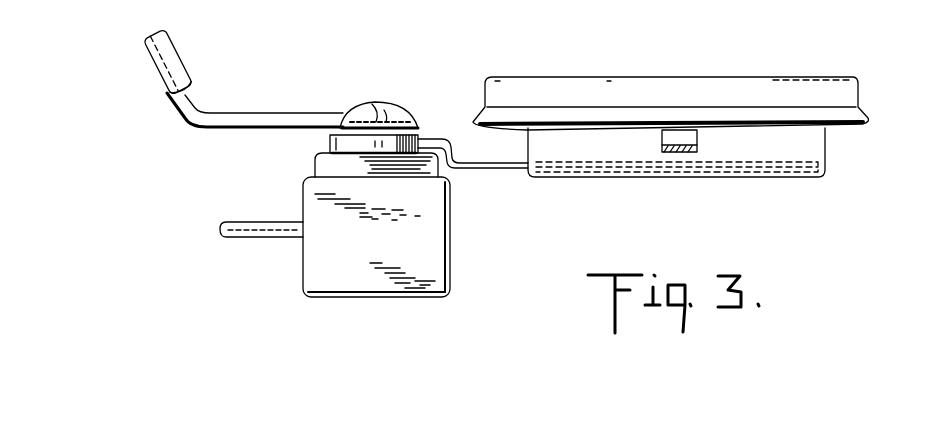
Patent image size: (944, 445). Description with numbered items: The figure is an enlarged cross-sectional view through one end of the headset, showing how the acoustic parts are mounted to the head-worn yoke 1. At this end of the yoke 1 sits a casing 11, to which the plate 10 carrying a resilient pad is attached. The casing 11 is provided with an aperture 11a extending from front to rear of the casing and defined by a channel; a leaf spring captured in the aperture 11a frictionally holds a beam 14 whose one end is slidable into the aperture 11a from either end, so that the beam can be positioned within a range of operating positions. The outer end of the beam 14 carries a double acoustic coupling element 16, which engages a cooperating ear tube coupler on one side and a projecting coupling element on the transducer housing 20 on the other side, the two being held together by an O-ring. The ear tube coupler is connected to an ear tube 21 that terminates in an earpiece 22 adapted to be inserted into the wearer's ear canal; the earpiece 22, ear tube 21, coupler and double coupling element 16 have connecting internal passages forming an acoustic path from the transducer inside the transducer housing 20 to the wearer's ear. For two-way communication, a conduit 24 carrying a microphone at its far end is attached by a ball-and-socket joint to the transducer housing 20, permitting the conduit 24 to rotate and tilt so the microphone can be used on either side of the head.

The yoke 1 is at (678, 143).
The plate 10 is at (843, 92).
The casing 11 is at (817, 145).
The aperture 11a is at (777, 163).
The beam 14 is at (495, 168).
The double acoustic coupling element 16 is at (332, 143).
The transducer housing 20 is at (345, 275).
The ear tube 21 is at (278, 120).
The earpiece 22 is at (180, 62).
The conduit 24 is at (238, 238).